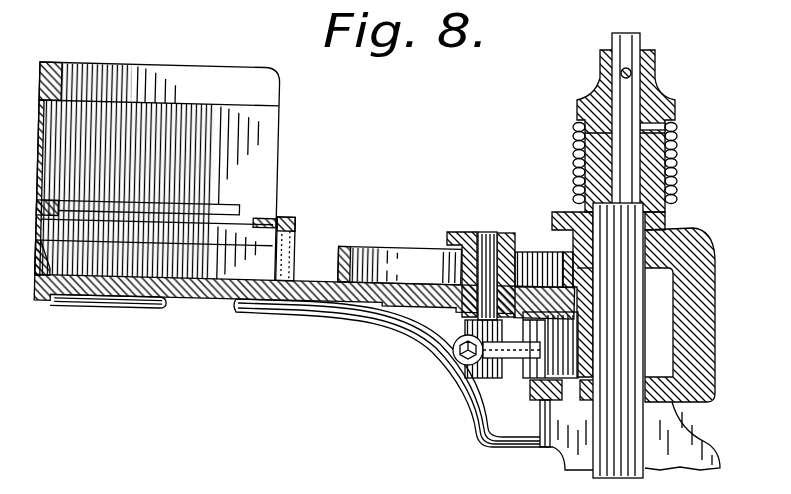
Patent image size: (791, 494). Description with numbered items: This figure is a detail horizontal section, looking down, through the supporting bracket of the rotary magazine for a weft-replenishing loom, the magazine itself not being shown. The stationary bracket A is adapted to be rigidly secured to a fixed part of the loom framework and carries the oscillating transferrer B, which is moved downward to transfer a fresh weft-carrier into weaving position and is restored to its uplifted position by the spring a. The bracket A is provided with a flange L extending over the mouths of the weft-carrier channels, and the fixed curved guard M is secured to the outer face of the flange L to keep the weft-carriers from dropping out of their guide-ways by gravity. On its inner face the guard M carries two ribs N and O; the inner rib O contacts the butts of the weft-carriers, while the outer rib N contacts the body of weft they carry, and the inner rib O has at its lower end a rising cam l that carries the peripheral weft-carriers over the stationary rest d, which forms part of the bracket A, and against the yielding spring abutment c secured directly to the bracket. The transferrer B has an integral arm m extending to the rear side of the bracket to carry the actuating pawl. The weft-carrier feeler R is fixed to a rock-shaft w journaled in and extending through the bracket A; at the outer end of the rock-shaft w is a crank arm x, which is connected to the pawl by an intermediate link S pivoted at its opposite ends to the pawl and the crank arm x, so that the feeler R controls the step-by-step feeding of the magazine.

The outer rib N is at (52, 62).
The fixed curved guard M is at (263, 139).
The inner rib O is at (217, 208).
The rising cam l is at (261, 210).
The stationary rest d is at (292, 234).
The yielding spring abutment c is at (344, 250).
The weft-carrier feeler R is at (452, 230).
The rock-shaft w is at (498, 260).
The oscillating transferrer B is at (556, 212).
The spring a is at (668, 190).
The transferrer arm m is at (712, 398).
The crank arm x is at (523, 358).
The link S is at (520, 447).
The stationary bracket A is at (212, 290).
The flange L is at (33, 280).